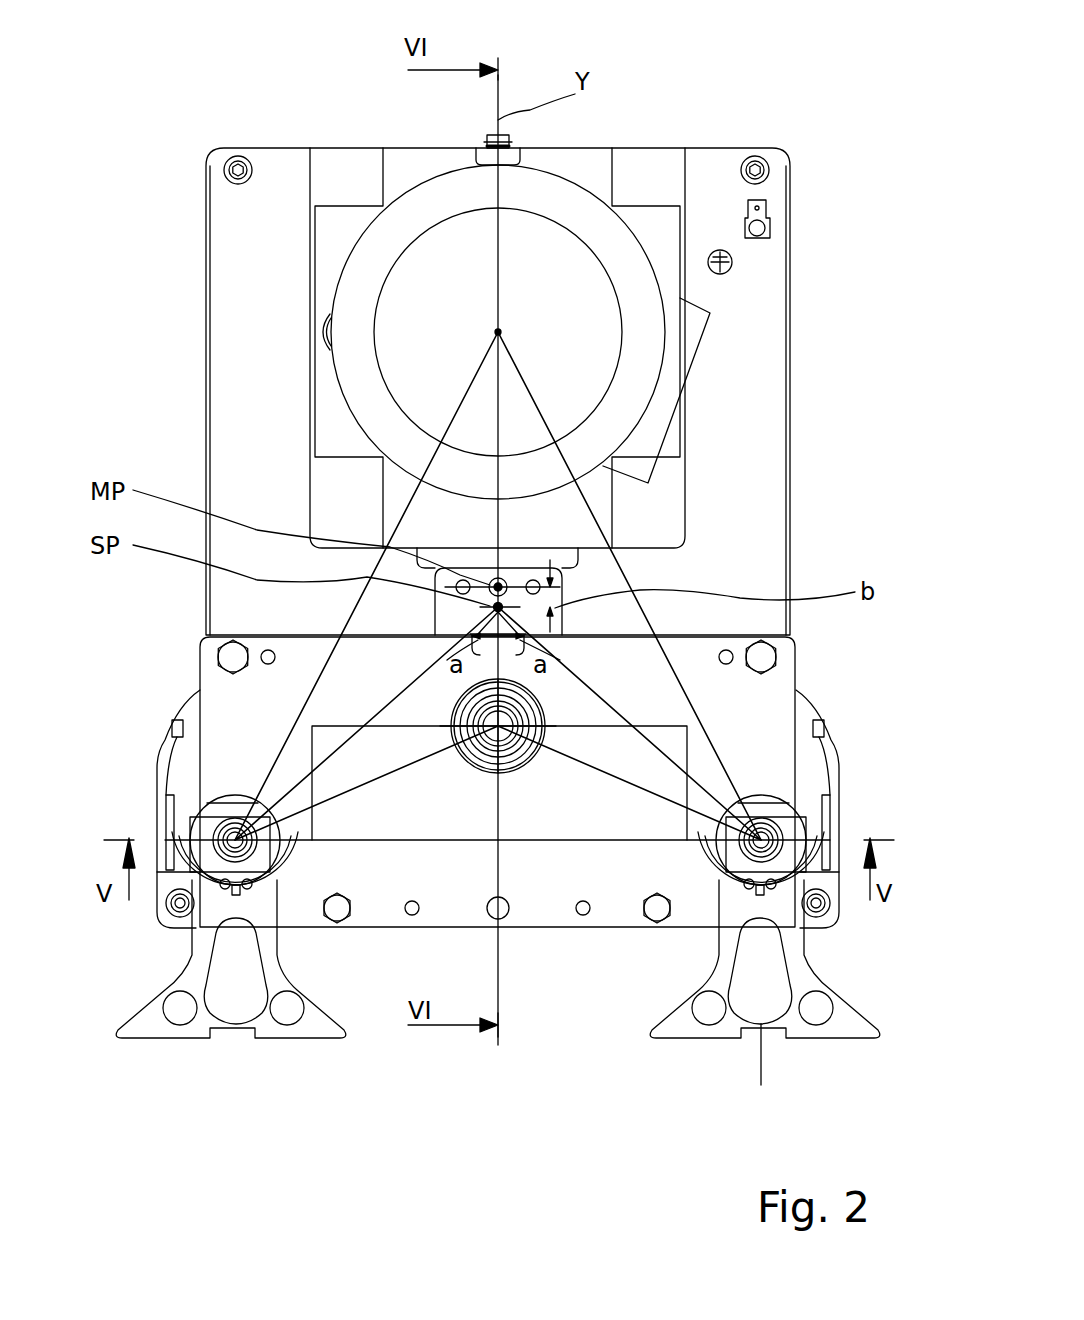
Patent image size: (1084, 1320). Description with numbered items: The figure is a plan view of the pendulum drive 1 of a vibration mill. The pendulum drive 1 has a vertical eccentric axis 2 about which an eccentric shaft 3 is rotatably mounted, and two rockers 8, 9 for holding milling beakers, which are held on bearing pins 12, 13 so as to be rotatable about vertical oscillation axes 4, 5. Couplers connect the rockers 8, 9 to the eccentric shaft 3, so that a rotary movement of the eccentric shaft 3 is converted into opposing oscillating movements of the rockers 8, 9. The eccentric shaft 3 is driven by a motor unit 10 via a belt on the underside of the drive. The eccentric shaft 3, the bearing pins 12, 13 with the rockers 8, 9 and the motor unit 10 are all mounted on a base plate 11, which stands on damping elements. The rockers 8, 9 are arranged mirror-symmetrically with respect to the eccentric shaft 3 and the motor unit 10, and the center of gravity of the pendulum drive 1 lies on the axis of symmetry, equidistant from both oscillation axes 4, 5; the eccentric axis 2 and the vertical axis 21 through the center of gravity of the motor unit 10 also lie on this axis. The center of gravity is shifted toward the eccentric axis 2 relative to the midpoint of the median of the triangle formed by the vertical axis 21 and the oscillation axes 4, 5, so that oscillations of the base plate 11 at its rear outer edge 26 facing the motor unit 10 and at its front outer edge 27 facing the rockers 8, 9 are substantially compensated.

The pendulum drive 1 is at (848, 88).
The eccentric axis 2 is at (513, 747).
The eccentric shaft 3 is at (465, 705).
The oscillation axis 4 is at (228, 836).
The oscillation axis 5 is at (768, 838).
The rocker 8 is at (197, 960).
The rocker 9 is at (797, 950).
The motor unit 10 is at (540, 243).
The base plate 11 is at (252, 233).
The bearing pin 12 is at (163, 873).
The bearing pin 13 is at (835, 872).
The vertical axis 21 is at (335, 320).
The rear outer edge 26 is at (448, 148).
The front outer edge 27 is at (440, 930).